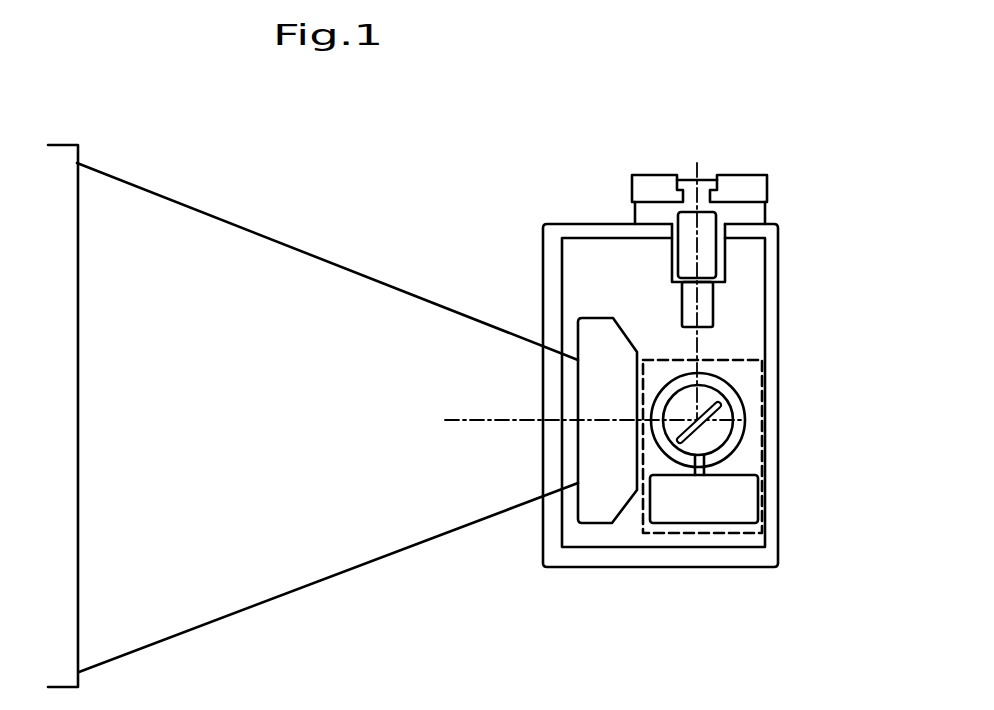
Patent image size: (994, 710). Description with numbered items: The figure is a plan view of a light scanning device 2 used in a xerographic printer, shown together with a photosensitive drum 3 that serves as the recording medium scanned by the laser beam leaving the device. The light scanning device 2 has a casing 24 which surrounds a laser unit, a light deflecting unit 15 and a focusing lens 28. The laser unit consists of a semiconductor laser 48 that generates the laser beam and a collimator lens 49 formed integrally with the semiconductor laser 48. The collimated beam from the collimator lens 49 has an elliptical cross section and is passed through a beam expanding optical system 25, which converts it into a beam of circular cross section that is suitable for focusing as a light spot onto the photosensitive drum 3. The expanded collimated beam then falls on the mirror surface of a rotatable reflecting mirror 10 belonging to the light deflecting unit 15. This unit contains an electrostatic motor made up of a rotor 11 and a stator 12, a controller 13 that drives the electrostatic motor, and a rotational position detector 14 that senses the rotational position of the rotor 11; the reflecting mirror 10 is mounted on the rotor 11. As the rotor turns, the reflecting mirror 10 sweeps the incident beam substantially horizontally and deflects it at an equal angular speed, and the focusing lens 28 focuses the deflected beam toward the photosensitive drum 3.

The light scanning device 2 is at (557, 166).
The photosensitive drum 3 is at (78, 435).
The reflecting mirror 10 is at (662, 435).
The rotor 11 is at (735, 440).
The stator 12 is at (738, 452).
The controller 13 is at (747, 509).
The rotational position detector 14 is at (700, 470).
The light deflecting unit 15 is at (736, 533).
The casing 24 is at (543, 233).
The beam expanding optical system 25 is at (707, 310).
The focusing lens 28 is at (600, 513).
The semiconductor laser 48 is at (684, 176).
The collimator lens 49 is at (712, 222).